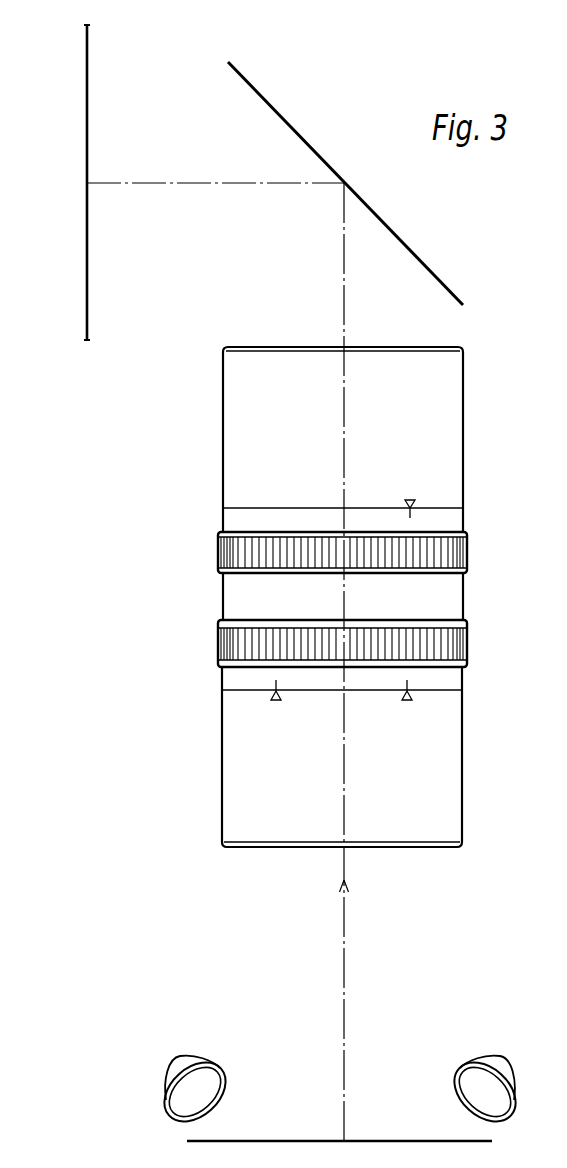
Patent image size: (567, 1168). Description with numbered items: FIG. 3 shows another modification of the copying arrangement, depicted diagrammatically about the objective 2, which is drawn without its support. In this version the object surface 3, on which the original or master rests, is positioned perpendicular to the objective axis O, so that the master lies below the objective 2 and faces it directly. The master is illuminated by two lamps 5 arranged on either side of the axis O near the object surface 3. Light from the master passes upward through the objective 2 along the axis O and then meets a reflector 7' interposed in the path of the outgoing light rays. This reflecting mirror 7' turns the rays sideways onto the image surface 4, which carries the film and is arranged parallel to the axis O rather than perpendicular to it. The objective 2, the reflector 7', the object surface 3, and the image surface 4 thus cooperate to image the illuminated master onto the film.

The objective 2 is at (448, 453).
The object surface 3 is at (280, 1140).
The image surface 4 is at (87, 290).
The lamps 5 is at (180, 1068).
The reflecting mirror 7' is at (345, 178).
The objective axis O is at (344, 977).